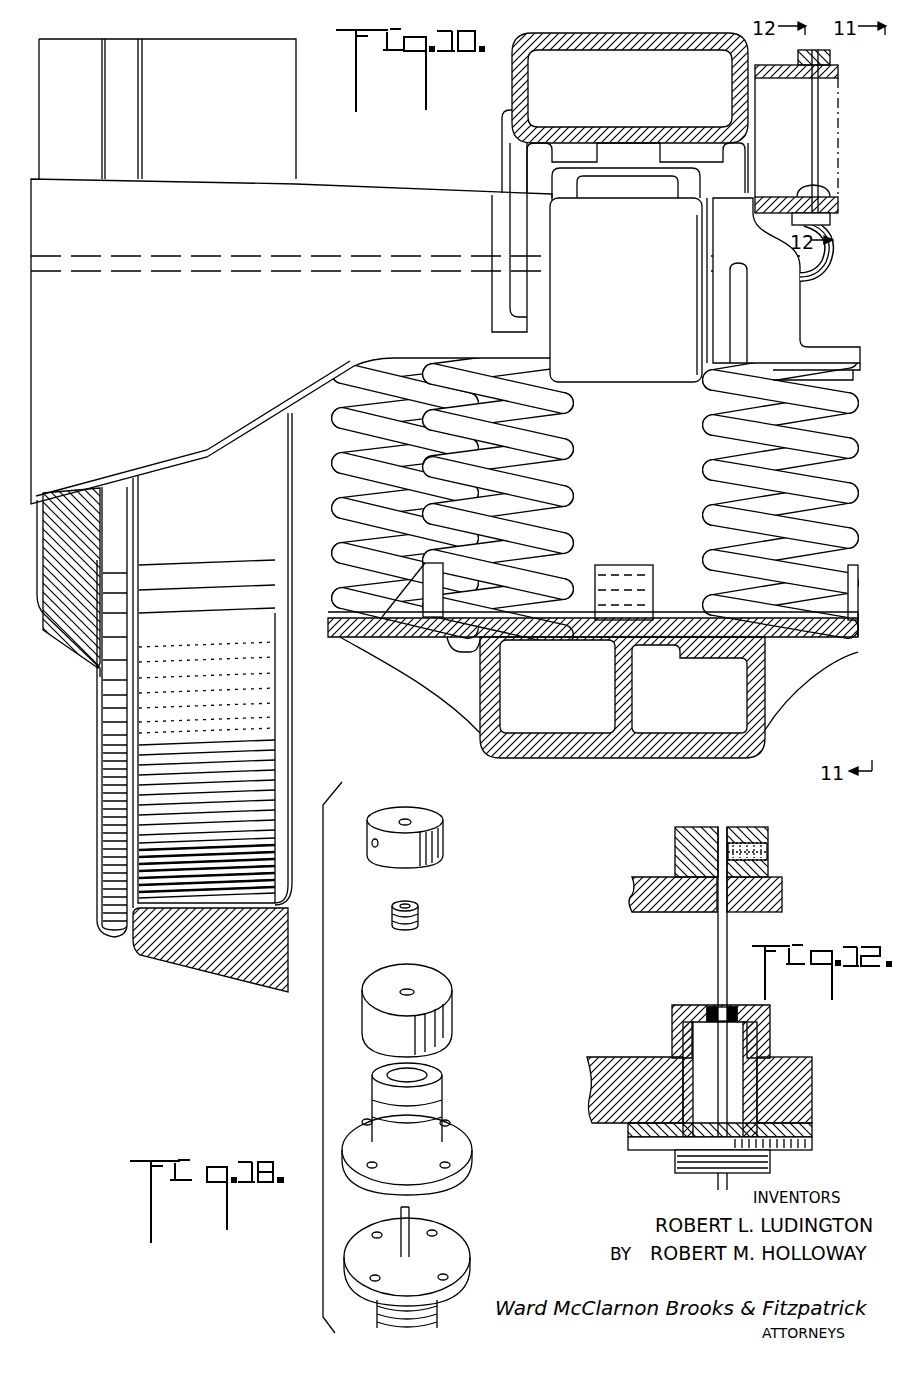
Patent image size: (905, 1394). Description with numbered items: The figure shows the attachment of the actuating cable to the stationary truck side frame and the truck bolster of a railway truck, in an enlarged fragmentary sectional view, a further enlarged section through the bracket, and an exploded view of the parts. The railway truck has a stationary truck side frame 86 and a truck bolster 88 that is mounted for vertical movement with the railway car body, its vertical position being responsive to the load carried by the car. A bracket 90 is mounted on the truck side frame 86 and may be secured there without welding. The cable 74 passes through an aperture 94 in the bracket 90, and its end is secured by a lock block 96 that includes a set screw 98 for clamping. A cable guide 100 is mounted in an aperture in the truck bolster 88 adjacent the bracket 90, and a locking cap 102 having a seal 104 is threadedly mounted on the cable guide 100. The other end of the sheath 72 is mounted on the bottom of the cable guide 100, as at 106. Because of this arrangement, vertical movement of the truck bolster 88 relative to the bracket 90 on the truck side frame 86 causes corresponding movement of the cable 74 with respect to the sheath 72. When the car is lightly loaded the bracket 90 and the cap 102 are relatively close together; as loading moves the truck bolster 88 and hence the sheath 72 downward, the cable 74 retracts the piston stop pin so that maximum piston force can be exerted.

In FIG. 13, the sheath 72 is at (445, 1237).
In FIG. 12, the sheath 72 is at (675, 1162).
In FIG. 12, the cable 74 is at (717, 953).
In FIG. 10, the truck side frame 86 is at (513, 96).
In FIG. 10, the truck bolster 88 is at (772, 196).
In FIG. 12, the truck bolster 88 is at (597, 1115).
In FIG. 10, the bracket 90 is at (770, 82).
In FIG. 12, the bracket 90 is at (645, 880).
In FIG. 12, the aperture 94 is at (730, 900).
In FIG. 13, the lock block 96 is at (443, 830).
In FIG. 12, the lock block 96 is at (688, 833).
In FIG. 12, the set screw 98 is at (767, 852).
In FIG. 13, the cable guide 100 is at (435, 1108).
In FIG. 12, the cable guide 100 is at (687, 1077).
In FIG. 13, the locking cap 102 is at (453, 1010).
In FIG. 12, the locking cap 102 is at (770, 1018).
In FIG. 13, the seal 104 is at (418, 916).
In FIG. 12, the seal 104 is at (700, 1002).
In FIG. 12, the sheath mounting 106 is at (632, 1142).